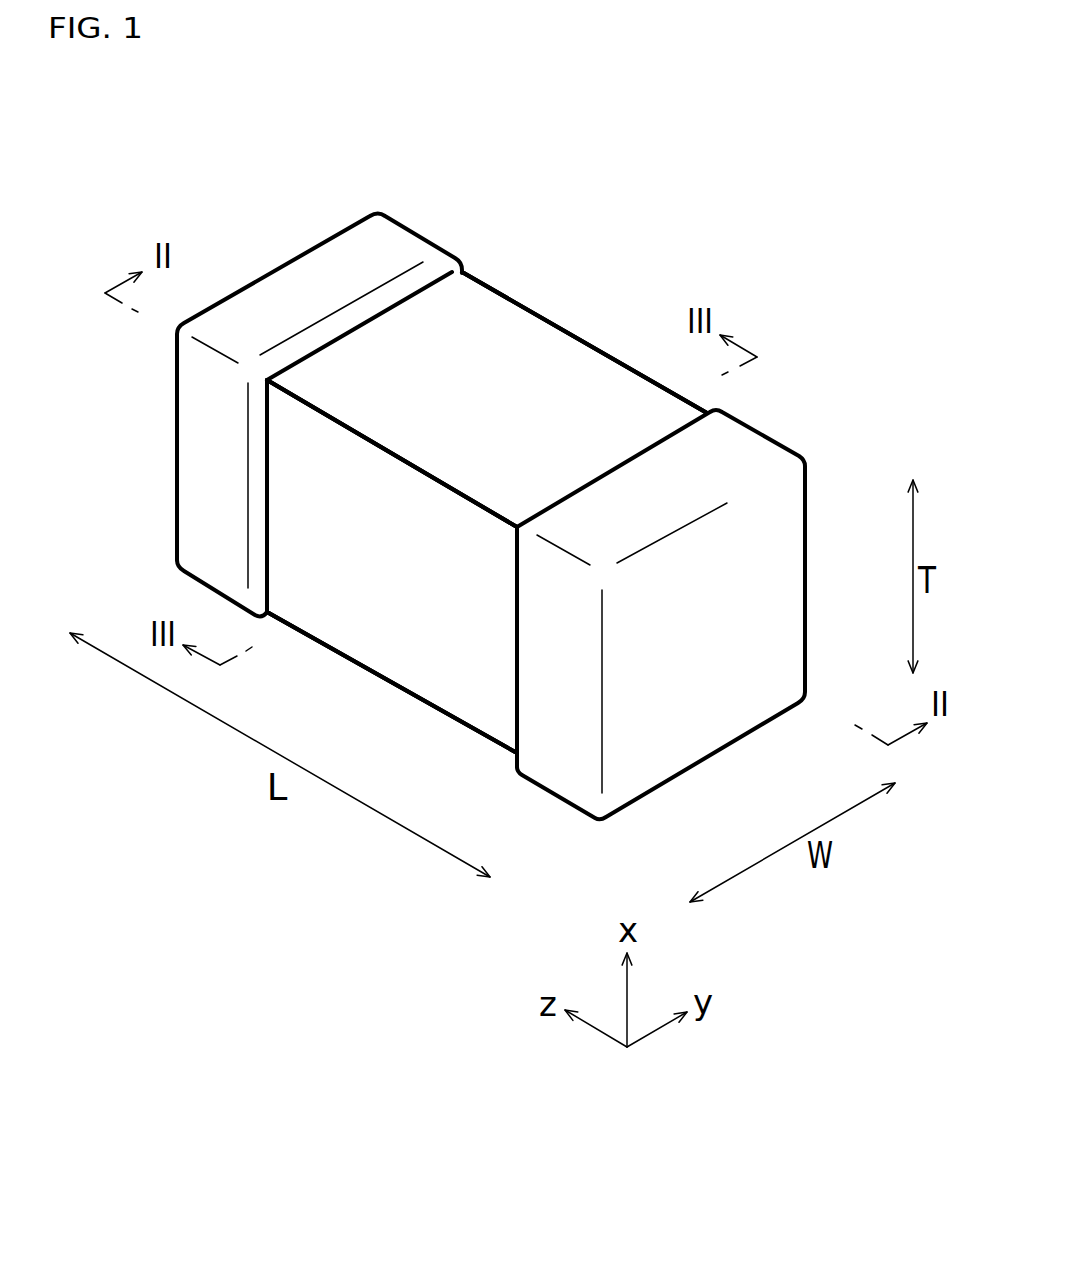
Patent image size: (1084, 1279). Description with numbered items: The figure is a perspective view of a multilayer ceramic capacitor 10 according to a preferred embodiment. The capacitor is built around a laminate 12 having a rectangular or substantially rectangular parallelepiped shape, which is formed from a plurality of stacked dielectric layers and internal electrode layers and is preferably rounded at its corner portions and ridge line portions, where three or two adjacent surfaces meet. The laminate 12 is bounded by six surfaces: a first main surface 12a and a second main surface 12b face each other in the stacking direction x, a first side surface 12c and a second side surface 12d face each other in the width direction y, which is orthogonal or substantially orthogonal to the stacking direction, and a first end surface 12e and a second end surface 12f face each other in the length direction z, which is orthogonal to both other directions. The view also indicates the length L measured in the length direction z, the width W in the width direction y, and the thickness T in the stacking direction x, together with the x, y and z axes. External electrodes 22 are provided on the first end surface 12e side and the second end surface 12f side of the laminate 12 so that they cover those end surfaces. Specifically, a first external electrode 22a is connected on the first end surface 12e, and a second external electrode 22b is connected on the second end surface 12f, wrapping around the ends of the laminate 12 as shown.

The multilayer ceramic capacitor 10 is at (140, 178).
The laminate 12 is at (567, 342).
The first main surface 12a is at (512, 335).
The second main surface 12b is at (468, 690).
The first side surface 12c is at (363, 627).
The second side surface 12d is at (607, 388).
The first end surface 12e is at (305, 302).
The second end surface 12f is at (743, 575).
The external electrodes 22 is at (357, 1035).
The first external electrode 22a is at (328, 255).
The second external electrode 22b is at (678, 742).